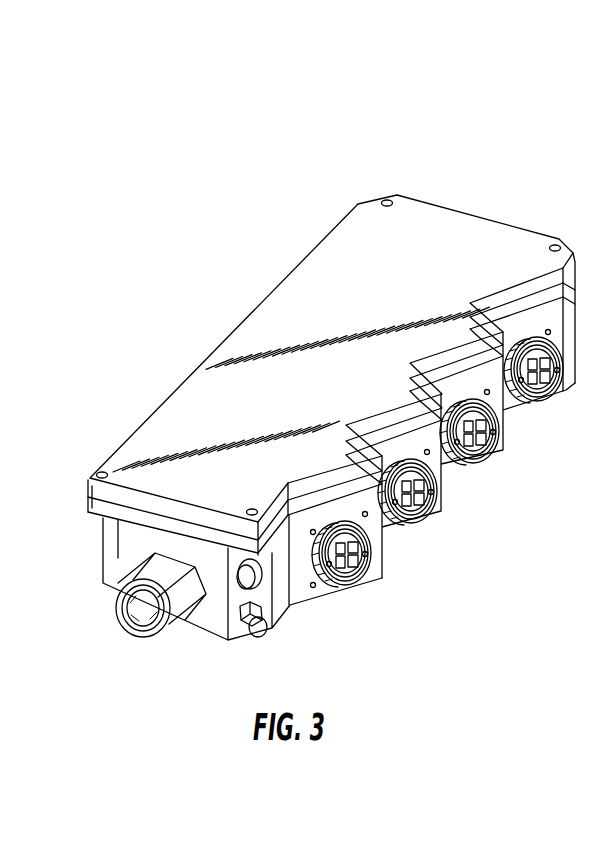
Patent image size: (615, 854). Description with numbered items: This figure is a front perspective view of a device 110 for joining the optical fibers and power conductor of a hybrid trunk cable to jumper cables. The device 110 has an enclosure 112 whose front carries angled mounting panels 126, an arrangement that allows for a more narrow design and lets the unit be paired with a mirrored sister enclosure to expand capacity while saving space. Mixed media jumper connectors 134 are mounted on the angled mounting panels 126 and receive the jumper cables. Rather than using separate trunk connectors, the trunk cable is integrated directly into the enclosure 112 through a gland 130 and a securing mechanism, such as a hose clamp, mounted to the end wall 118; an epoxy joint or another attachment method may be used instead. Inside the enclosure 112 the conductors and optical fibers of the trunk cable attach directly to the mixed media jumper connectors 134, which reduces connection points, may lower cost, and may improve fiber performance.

The device 110 is at (347, 413).
The enclosure 112 is at (525, 215).
The end wall 118 is at (213, 608).
The angled mounting panels 126 is at (302, 592).
The gland 130 is at (138, 622).
The mixed media jumper connectors 134 is at (418, 527).